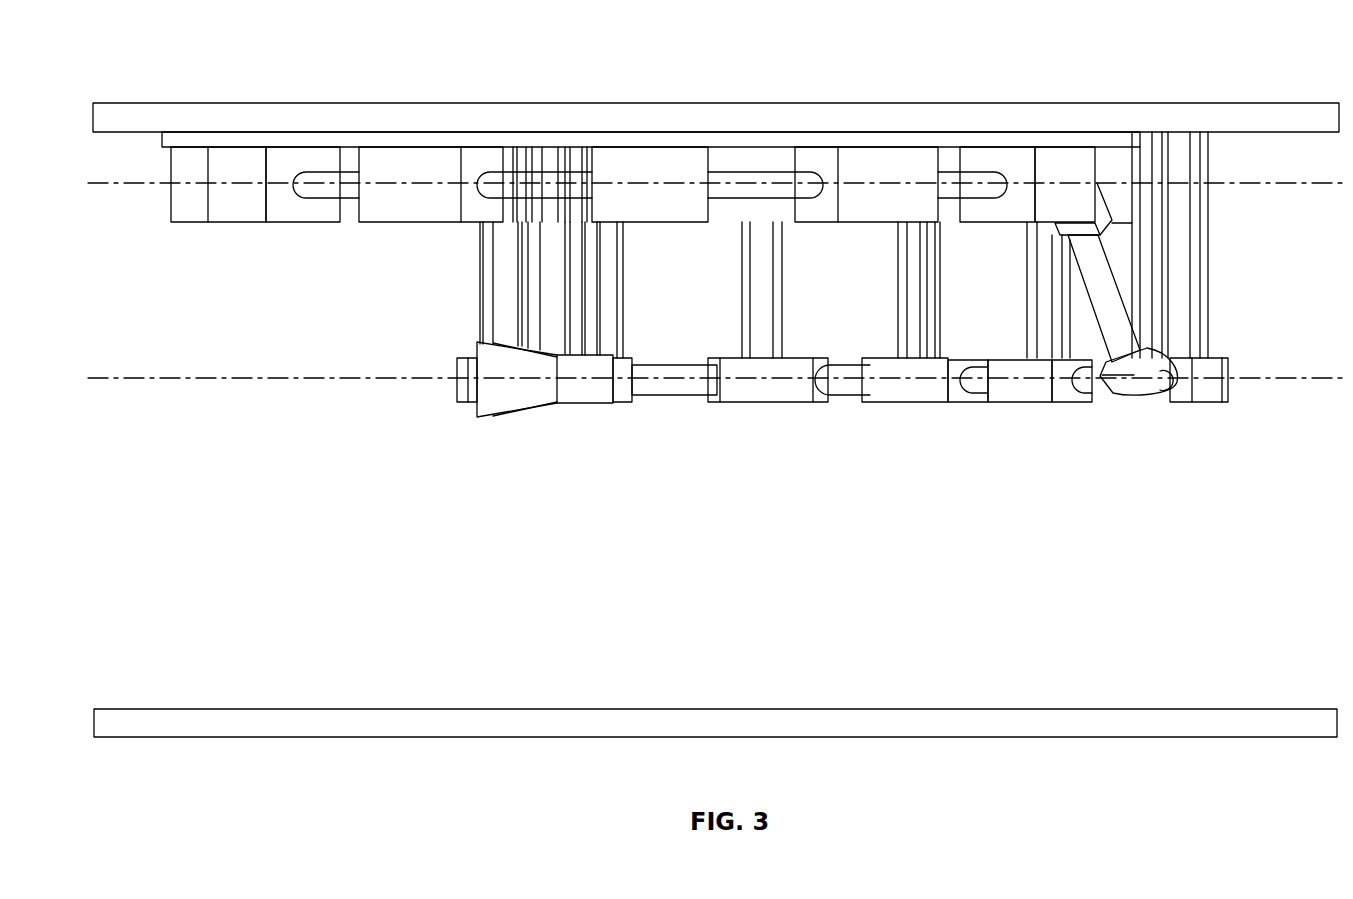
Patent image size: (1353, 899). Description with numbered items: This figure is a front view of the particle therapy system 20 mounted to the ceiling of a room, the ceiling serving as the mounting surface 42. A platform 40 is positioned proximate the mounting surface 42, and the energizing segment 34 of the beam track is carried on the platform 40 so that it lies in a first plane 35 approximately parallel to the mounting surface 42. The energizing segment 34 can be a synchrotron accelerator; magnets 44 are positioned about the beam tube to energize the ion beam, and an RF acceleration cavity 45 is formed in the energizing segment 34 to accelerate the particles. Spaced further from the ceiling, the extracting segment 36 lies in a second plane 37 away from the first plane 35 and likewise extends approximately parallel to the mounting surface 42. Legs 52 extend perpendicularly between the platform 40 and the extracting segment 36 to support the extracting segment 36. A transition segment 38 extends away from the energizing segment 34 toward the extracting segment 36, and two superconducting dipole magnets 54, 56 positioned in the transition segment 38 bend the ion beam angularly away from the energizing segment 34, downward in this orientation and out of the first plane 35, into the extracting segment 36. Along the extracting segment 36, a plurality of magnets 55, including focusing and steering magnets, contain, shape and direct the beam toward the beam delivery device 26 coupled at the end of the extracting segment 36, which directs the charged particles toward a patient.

The particle therapy system 20 is at (672, 460).
The beam delivery device 26 is at (558, 413).
The energizing segment 34 is at (780, 160).
The first plane 35 is at (128, 186).
The extracting segment 36 is at (973, 392).
The second plane 37 is at (194, 381).
The transition segment 38 is at (1113, 310).
The platform 40 is at (290, 143).
The mounting surface 42 is at (1018, 117).
The magnets 44 is at (420, 157).
The RF acceleration cavity 45 is at (232, 163).
The legs 52 is at (767, 320).
The superconducting dipole magnet 54 is at (1100, 207).
The magnets 55 is at (780, 403).
The superconducting dipole magnet 56 is at (1150, 387).